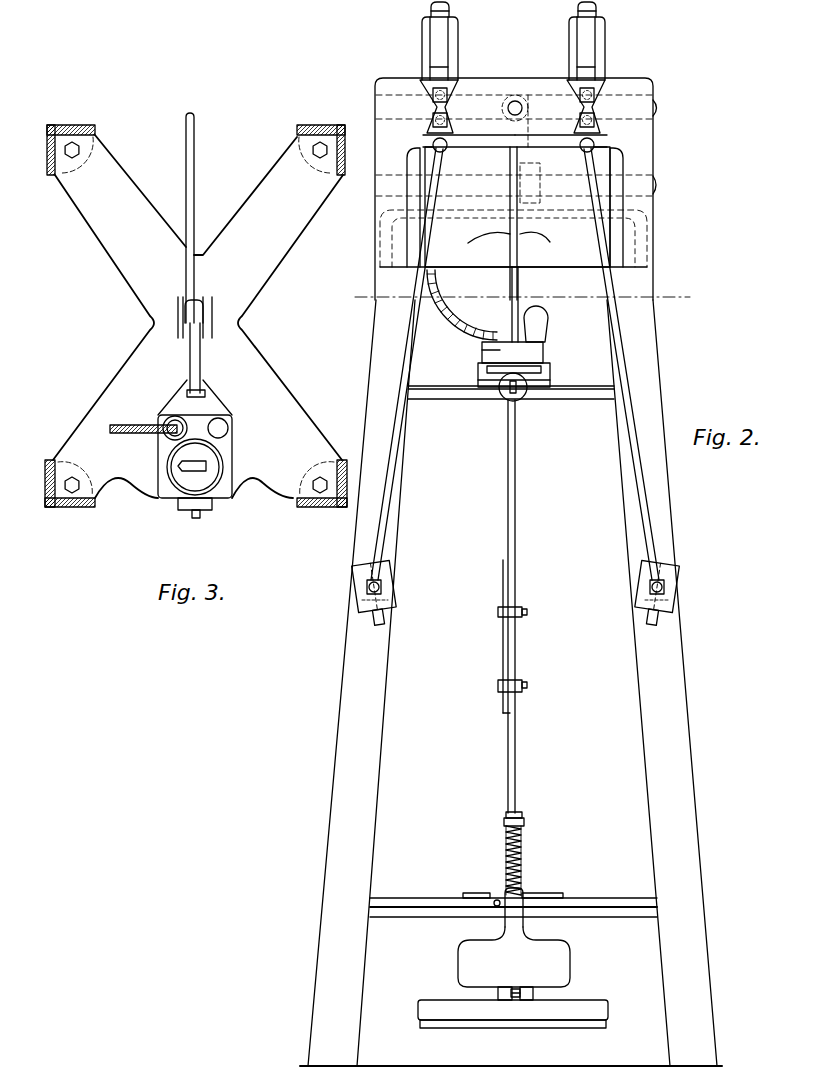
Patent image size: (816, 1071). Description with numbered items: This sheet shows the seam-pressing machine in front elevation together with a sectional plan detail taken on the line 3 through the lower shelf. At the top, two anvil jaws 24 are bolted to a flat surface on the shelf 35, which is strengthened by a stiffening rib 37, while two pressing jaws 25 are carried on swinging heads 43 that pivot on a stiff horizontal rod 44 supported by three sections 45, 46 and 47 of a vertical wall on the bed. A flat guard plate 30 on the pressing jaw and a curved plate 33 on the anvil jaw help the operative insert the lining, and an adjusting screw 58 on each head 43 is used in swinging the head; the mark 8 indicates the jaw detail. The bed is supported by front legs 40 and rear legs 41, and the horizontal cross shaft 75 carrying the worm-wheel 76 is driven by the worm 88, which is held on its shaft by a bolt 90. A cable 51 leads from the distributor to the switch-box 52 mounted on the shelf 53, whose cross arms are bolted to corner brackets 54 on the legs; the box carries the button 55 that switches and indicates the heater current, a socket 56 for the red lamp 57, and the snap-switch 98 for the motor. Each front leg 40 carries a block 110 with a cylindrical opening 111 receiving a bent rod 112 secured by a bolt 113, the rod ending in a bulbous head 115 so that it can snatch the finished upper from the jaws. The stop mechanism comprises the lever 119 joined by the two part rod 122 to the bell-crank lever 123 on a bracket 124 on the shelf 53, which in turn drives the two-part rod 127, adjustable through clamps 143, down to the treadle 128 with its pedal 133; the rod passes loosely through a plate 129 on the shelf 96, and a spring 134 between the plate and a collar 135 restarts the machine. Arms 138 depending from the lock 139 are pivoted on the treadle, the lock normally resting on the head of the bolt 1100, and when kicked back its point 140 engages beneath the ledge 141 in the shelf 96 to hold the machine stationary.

In FIG. 2, the section line 3— 3 is at (359, 296).
In FIG. 2, the clamp jaw marks 8 is at (440, 63).
In FIG. 2, the anvil jaws 24 is at (430, 118).
In FIG. 2, the pressing jaws 25 is at (418, 83).
In FIG. 2, the flat guard plate 30 is at (445, 82).
In FIG. 2, the curved plate 33 is at (422, 135).
In FIG. 2, the shelf 35 is at (563, 140).
In FIG. 2, the stiffening rib 37 is at (515, 181).
In FIG. 2, the front legs 40 is at (343, 772).
In FIG. 3, the front legs 40 is at (75, 508).
In FIG. 3, the rear legs 41 is at (96, 127).
In FIG. 2, the swinging head 43 is at (437, 39).
In FIG. 2, the horizontal rod 44 is at (660, 107).
In FIG. 2, the wall section 45 is at (378, 80).
In FIG. 2, the wall section 46 is at (498, 78).
In FIG. 2, the wall section 47 is at (630, 74).
In FIG. 2, the cable 51 is at (477, 311).
In FIG. 3, the cable 51 is at (130, 424).
In FIG. 2, the switch-box 52 is at (490, 380).
In FIG. 2, the shelf 53 is at (587, 391).
In FIG. 3, the shelf 53 is at (294, 420).
In FIG. 3, the corner brackets 54 is at (327, 495).
In FIG. 2, the button 55 is at (522, 349).
In FIG. 3, the button 55 is at (206, 463).
In FIG. 3, the socket 56 is at (218, 422).
In FIG. 2, the electric lamp 57 is at (540, 332).
In FIG. 3, the electric lamp 57 is at (224, 442).
In FIG. 2, the adjusting screw 58 is at (432, 3).
In FIG. 2, the horizontal cross shaft 75 is at (659, 184).
In FIG. 2, the worm-wheel 76 is at (552, 253).
In FIG. 2, the worm 88 is at (524, 107).
In FIG. 2, the bolt 90 is at (519, 98).
In FIG. 2, the shelf 96 is at (597, 898).
In FIG. 2, the snap-switch 98 is at (518, 396).
In FIG. 3, the snap-switch 98 is at (199, 515).
In FIG. 2, the block 110 is at (385, 583).
In FIG. 2, the cylindrical opening 111 is at (390, 605).
In FIG. 2, the bent rod 112 is at (390, 510).
In FIG. 2, the bolt 113 is at (367, 593).
In FIG. 2, the bulbous head 115 is at (445, 149).
In FIG. 2, the lever 119 is at (519, 283).
In FIG. 3, the two part rod 122 is at (195, 161).
In FIG. 2, the bell-crank lever 123 is at (540, 317).
In FIG. 3, the bell-crank lever 123 is at (197, 356).
In FIG. 3, the bracket 124 is at (212, 307).
In FIG. 2, the two-part rod 127 is at (516, 522).
In FIG. 2, the treadle 128 is at (522, 995).
In FIG. 2, the plate 129 is at (540, 893).
In FIG. 2, the pedal 133 is at (588, 1010).
In FIG. 2, the spring 134 is at (522, 850).
In FIG. 2, the collar 135 is at (524, 817).
In FIG. 2, the arms 138 is at (490, 997).
In FIG. 2, the lock 139 is at (558, 957).
In FIG. 2, the point 140 is at (506, 892).
In FIG. 2, the ledge 141 is at (494, 906).
In FIG. 2, the clamps 143 is at (517, 681).
In FIG. 2, the nut 1100 is at (516, 998).